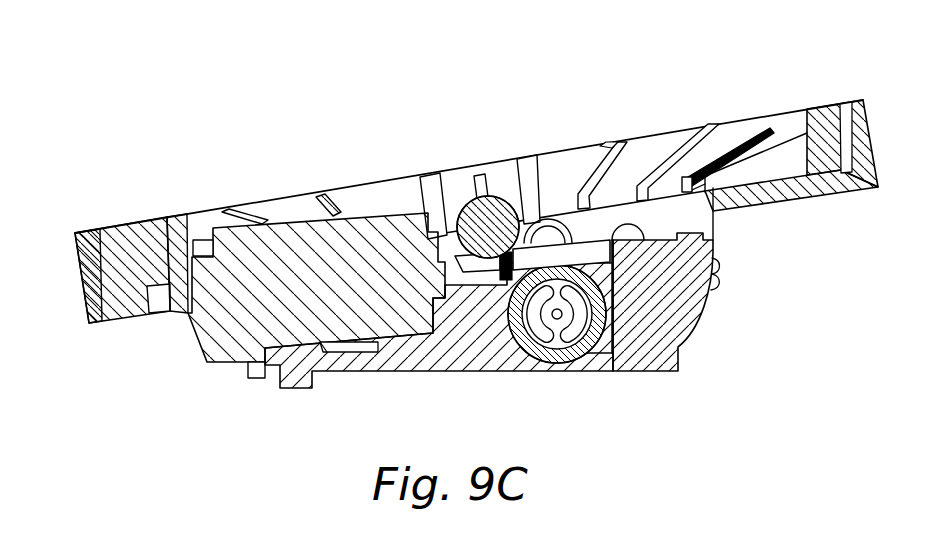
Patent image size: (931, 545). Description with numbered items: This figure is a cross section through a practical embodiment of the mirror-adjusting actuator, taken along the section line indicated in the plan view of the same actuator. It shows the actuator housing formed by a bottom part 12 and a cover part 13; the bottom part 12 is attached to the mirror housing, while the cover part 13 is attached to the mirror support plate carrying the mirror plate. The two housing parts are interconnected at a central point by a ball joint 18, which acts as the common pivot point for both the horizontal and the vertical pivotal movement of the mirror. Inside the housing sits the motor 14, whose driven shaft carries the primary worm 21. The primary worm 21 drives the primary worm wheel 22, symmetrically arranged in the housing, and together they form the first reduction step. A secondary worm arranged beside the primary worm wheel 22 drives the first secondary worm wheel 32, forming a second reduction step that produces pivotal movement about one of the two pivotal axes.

The bottom part 12 is at (417, 372).
The cover part 13 is at (742, 120).
The motor 14 is at (264, 298).
The ball joint 18 is at (497, 200).
The primary worm 21 is at (561, 257).
The primary worm wheel 22 is at (530, 358).
The first secondary worm wheel 32 is at (597, 230).